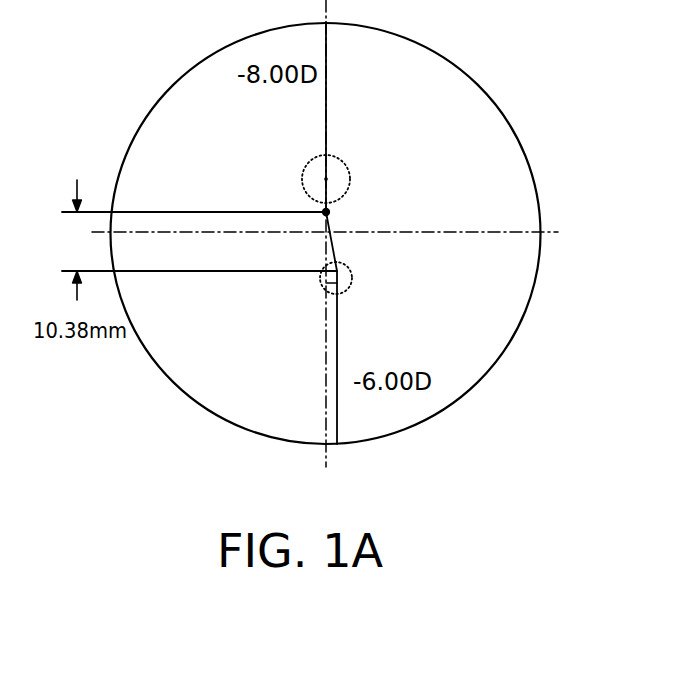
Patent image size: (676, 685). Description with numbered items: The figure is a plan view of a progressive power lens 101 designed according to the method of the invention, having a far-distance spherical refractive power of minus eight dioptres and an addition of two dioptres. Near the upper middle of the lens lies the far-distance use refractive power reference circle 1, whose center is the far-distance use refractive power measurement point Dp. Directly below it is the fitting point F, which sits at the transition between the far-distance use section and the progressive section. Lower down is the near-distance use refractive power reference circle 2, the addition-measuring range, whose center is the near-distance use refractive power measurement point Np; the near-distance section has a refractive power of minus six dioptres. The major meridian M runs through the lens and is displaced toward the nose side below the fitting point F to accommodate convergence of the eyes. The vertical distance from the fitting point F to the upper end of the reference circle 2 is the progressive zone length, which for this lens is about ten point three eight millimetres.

The progressive power lens 101 is at (505, 117).
The far-distance use refractive power reference circle 1 is at (342, 168).
The near-distance use refractive power reference circle 2 is at (346, 283).
The fitting point F is at (328, 212).
The major meridian M is at (337, 342).
The far-distance use refractive power measurement point Dp is at (324, 180).
The near-distance use refractive power measurement point Np is at (336, 283).